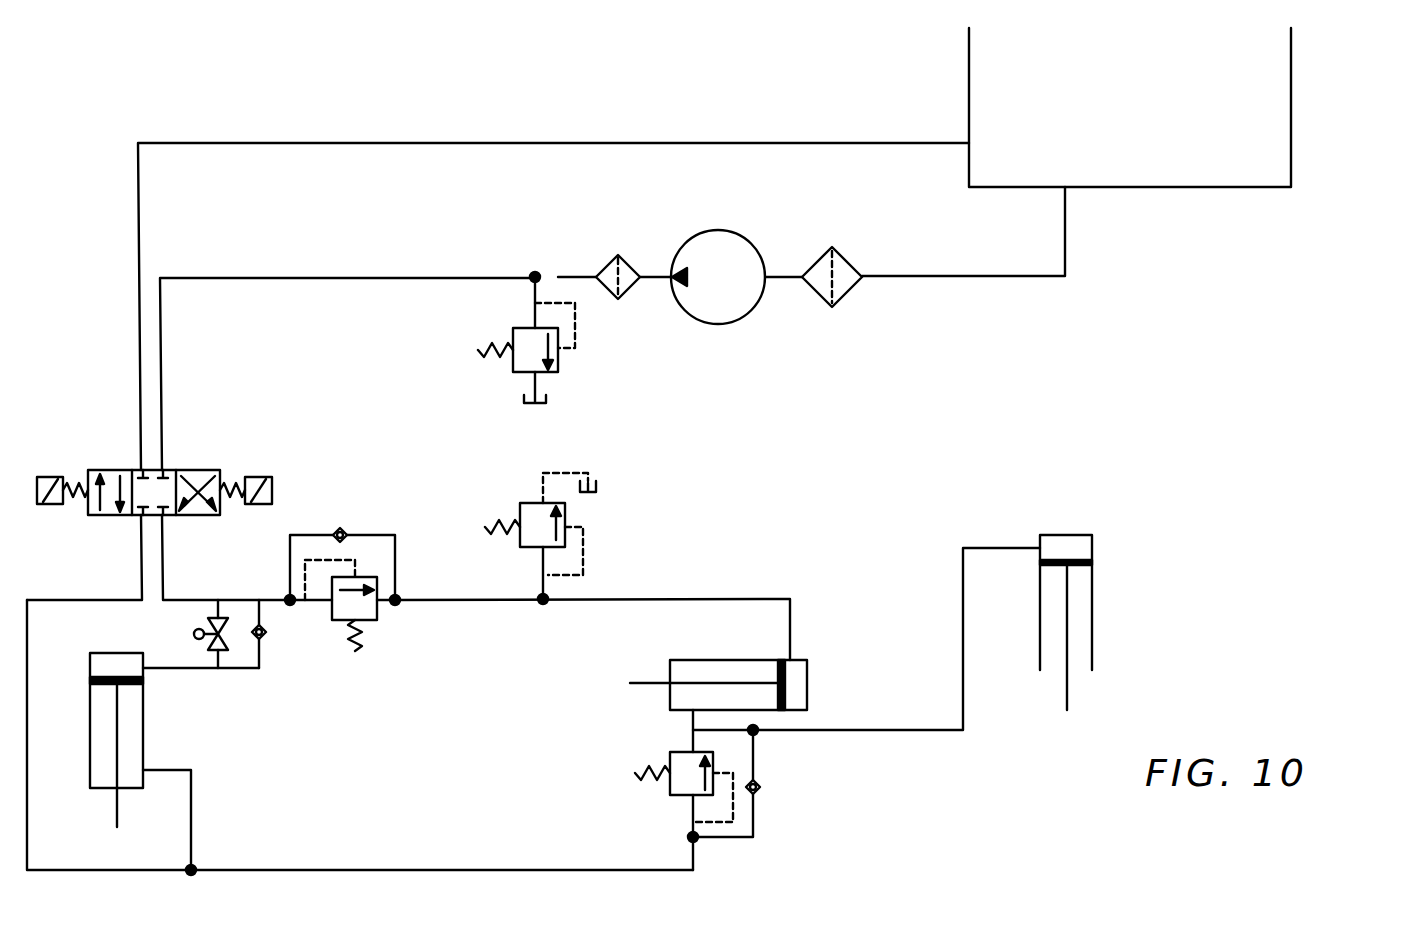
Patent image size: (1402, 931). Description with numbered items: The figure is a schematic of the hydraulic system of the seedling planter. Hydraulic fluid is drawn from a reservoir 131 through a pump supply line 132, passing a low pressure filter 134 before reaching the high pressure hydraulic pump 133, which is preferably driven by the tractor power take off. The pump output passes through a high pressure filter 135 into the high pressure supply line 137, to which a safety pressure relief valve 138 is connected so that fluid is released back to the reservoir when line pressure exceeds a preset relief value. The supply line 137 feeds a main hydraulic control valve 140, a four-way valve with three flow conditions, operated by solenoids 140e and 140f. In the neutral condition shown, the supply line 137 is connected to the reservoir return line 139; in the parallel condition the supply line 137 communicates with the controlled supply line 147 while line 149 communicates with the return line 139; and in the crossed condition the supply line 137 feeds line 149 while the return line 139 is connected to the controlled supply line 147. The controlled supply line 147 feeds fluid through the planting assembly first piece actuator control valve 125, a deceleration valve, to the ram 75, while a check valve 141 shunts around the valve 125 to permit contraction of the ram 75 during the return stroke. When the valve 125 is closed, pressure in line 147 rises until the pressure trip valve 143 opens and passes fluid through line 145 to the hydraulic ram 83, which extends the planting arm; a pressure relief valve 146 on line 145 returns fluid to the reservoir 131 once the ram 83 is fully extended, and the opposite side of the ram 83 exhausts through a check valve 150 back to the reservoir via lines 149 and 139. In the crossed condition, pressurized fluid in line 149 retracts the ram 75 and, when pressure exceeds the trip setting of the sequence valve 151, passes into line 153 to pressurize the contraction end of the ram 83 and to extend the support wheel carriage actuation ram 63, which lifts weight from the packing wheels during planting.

The reservoir 131 is at (1121, 162).
The reservoir return line 139 is at (306, 143).
The high pressure supply line 137 is at (287, 278).
The pump supply line 132 is at (963, 277).
The high pressure filter 135 is at (623, 268).
The high pressure hydraulic pump 133 is at (726, 318).
The low pressure filter 134 is at (835, 308).
The safety pressure relief valve 138 is at (560, 370).
The main hydraulic control valve 140 is at (179, 450).
The solenoid 140e is at (42, 476).
The up solenoid 140f is at (266, 477).
The line 149 is at (140, 587).
The controlled supply line 147 is at (165, 587).
The planting assembly first piece actuator control valve 125 is at (192, 619).
The check valve 141 is at (262, 640).
The ram 75 is at (143, 728).
The pressure trip valve 143 is at (389, 624).
The line 145 is at (483, 600).
The pressure relief valve 146 is at (566, 510).
The hydraulic ram 83 is at (713, 658).
The line 153 is at (868, 730).
The sequence valve 151 is at (668, 797).
The check valve 150 is at (760, 790).
The support wheel carriage actuation ram 63 is at (1092, 605).